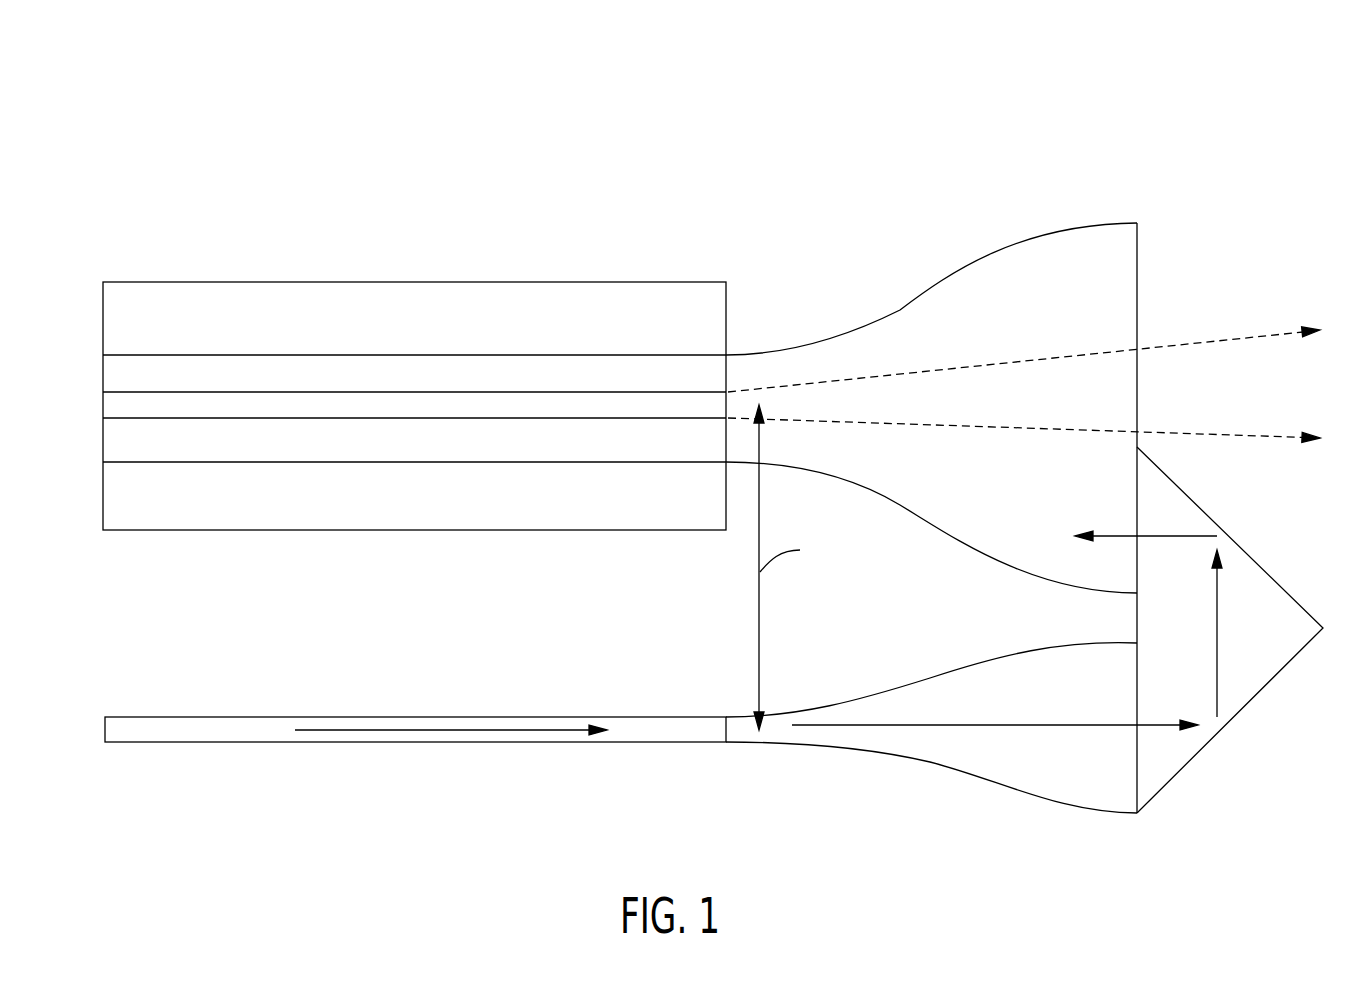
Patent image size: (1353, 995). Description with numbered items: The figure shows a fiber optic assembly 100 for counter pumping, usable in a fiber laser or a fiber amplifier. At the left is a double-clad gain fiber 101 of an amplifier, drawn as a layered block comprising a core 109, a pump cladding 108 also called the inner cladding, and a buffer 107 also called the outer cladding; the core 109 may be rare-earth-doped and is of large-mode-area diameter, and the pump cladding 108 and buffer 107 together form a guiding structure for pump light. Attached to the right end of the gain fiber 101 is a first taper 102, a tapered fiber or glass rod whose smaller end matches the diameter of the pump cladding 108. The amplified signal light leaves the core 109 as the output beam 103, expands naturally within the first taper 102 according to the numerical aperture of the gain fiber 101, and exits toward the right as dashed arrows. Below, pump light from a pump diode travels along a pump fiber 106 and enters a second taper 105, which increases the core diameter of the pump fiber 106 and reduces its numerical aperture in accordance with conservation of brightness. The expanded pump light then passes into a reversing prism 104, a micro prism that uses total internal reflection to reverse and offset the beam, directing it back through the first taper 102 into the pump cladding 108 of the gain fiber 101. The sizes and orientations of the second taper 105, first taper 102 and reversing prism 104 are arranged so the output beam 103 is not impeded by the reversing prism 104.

The fiber optic assembly 100 is at (216, 142).
The gain fiber 101 is at (400, 243).
The first taper 102 is at (1040, 302).
The output beam 103 is at (1260, 405).
The reversing prism 104 is at (1253, 653).
The second taper 105 is at (1023, 767).
The pump fiber 106 is at (385, 713).
The buffer 107 is at (553, 492).
The pump cladding 108 is at (410, 435).
The core 109 is at (172, 398).